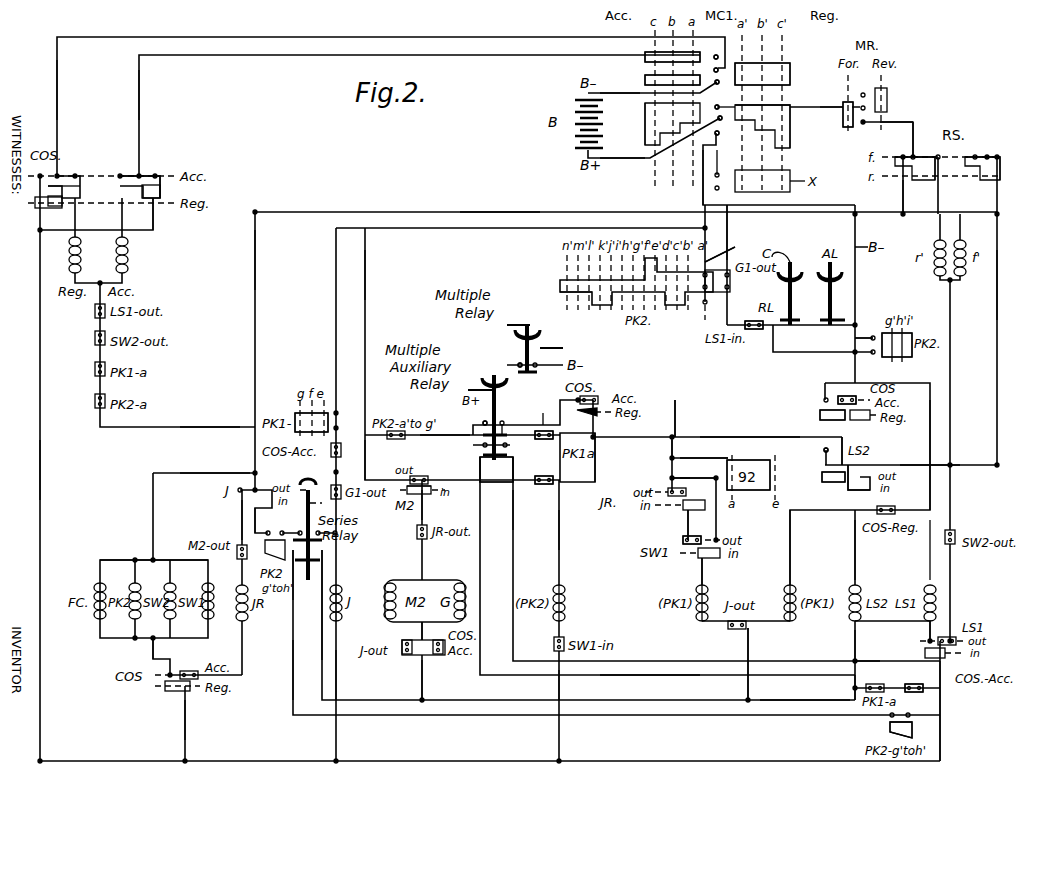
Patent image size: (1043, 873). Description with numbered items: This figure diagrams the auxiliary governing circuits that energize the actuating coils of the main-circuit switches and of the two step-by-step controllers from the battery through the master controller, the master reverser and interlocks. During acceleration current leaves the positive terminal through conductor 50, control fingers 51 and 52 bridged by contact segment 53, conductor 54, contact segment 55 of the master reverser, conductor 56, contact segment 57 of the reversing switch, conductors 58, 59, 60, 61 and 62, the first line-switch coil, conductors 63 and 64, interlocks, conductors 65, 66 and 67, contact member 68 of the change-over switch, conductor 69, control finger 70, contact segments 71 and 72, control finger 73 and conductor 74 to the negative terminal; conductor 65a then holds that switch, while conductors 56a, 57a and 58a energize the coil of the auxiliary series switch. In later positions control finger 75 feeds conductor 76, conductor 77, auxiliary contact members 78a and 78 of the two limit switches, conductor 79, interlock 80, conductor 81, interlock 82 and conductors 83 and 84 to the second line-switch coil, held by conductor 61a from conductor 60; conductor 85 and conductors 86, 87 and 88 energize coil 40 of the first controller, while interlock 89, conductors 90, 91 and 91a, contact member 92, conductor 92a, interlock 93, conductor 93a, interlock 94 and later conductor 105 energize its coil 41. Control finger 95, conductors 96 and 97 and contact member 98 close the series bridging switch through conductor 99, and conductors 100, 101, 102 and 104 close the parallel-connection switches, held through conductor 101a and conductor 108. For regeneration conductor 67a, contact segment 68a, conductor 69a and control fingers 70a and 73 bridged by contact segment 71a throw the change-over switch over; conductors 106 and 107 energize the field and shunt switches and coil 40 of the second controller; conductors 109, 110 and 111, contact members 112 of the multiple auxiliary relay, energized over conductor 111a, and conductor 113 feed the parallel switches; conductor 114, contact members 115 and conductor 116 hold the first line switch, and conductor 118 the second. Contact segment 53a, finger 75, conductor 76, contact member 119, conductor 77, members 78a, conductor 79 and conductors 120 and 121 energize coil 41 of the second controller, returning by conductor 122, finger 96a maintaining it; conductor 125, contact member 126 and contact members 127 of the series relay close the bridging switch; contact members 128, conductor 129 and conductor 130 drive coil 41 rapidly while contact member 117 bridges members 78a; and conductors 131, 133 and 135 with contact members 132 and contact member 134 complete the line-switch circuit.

The actuating coil 40 is at (800, 585).
The actuating coil 41 is at (559, 588).
The conductor 50 is at (625, 158).
The control finger 51 is at (727, 113).
The control finger 52 is at (722, 99).
The contact segment 53 is at (790, 118).
The contact segment 53a is at (645, 120).
The conductor 54 is at (832, 107).
The contact segment 55 is at (843, 125).
The conductor 56 is at (913, 122).
The conductor 56a is at (255, 262).
The contact segment 57 is at (915, 179).
The conductor 57a is at (242, 520).
The conductor 58 is at (903, 198).
The conductor 58a is at (185, 725).
The conductor 59 is at (952, 214).
The conductor 60 is at (997, 285).
The conductor 61 is at (930, 492).
The conductor 61a is at (930, 458).
The conductor 62 is at (930, 548).
The conductor 63 is at (925, 641).
The conductor 64 is at (855, 645).
The conductor 65 is at (940, 730).
The conductor 65a is at (940, 680).
The negative conductor 66 is at (40, 470).
The conductor 67 is at (153, 230).
The conductor 67a is at (220, 427).
The contact member 68 is at (142, 176).
The contact segment 68a is at (62, 207).
The conductor 69 is at (139, 100).
The conductor 69a is at (57, 90).
The control finger 70 is at (709, 50).
The control finger 70a is at (706, 66).
The contact segment 71 is at (645, 58).
The contact segment 71a is at (779, 69).
The contact segment 72 is at (645, 80).
The control finger 73 is at (724, 76).
The conductor 74 is at (625, 93).
The control finger 75 is at (708, 133).
The conductor 76 is at (727, 225).
The conductor 77 is at (745, 325).
The auxiliary contact members 78 is at (830, 325).
The auxiliary contact members 78a is at (792, 325).
The conductor 79 is at (855, 332).
The interlock 80 is at (838, 400).
The conductor 81 is at (830, 420).
The interlock 82 is at (842, 450).
The conductor 83 is at (848, 497).
The conductor 84 is at (855, 548).
The conductor 85 is at (790, 515).
The conductor 86 is at (748, 650).
The conductor 87 is at (805, 692).
The conductor 88 is at (855, 688).
The interlock 89 is at (822, 477).
The conductor 90 is at (809, 455).
The conductor 91 is at (672, 450).
The conductor 91a is at (704, 452).
The contact member 92 is at (748, 475).
The conductor 92a is at (698, 472).
The interlock 93 is at (697, 525).
The conductor 93a is at (683, 540).
The interlock 94 is at (702, 570).
The control finger 95 is at (707, 162).
The conductor 96 is at (703, 200).
The control finger 96a is at (732, 251).
The conductor 97 is at (490, 212).
The contact member 98 is at (295, 418).
The conductor 99 is at (336, 680).
The conductor 100 is at (675, 418).
The conductor 101 is at (595, 458).
The conductor 101a is at (407, 486).
The conductor 102 is at (422, 508).
The conductor 104 is at (422, 678).
The conductor 105 is at (422, 630).
The conductor 106 is at (224, 473).
The conductor 107 is at (153, 652).
The conductor 108 is at (365, 278).
The conductor 109 is at (375, 460).
The conductor 110 is at (440, 435).
The conductor 111 is at (480, 418).
The conductor 111a is at (512, 365).
The auxiliary contact members 112 is at (514, 422).
The conductor 113 is at (547, 413).
The conductor 114 is at (660, 675).
The auxiliary contact members 115 is at (496, 469).
The conductor 116 is at (513, 505).
The contact member 117 is at (912, 357).
The conductor 118 is at (930, 437).
The contact member 119 is at (621, 310).
The conductor 120 is at (748, 437).
The conductor 121 is at (559, 530).
The conductor 122 is at (559, 688).
The conductor 125 is at (255, 520).
The contact member 126 is at (265, 547).
The auxiliary contact members 127 is at (320, 560).
The auxiliary contact members 128 is at (483, 450).
The conductor 129 is at (537, 445).
The conductor 130 is at (545, 476).
The conductor 131 is at (322, 645).
The auxiliary contact members 132 is at (307, 575).
The conductor 133 is at (293, 665).
The contact member 134 is at (890, 728).
The conductor 135 is at (916, 696).